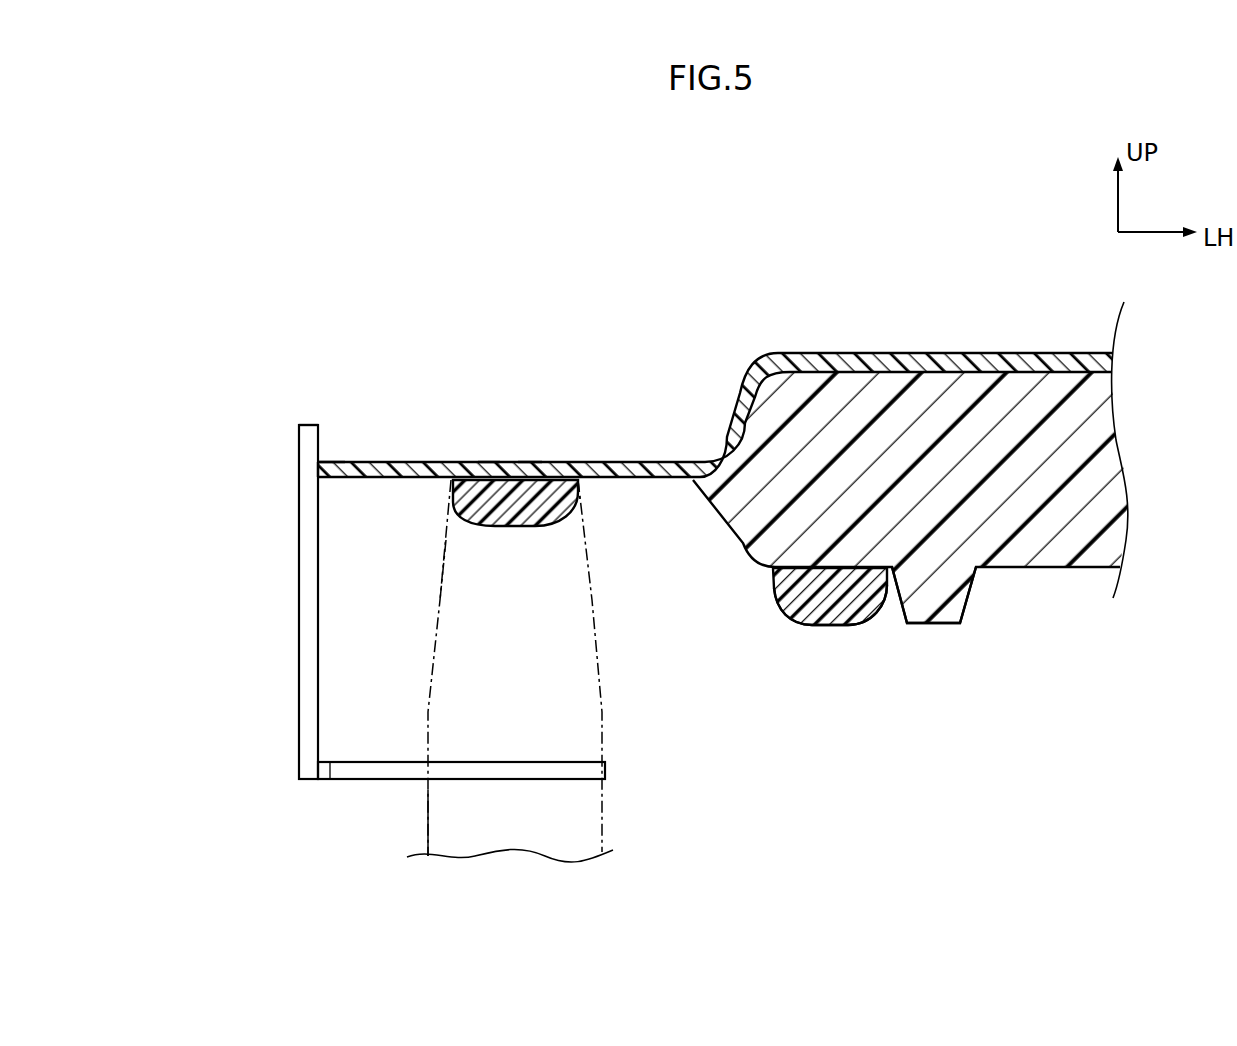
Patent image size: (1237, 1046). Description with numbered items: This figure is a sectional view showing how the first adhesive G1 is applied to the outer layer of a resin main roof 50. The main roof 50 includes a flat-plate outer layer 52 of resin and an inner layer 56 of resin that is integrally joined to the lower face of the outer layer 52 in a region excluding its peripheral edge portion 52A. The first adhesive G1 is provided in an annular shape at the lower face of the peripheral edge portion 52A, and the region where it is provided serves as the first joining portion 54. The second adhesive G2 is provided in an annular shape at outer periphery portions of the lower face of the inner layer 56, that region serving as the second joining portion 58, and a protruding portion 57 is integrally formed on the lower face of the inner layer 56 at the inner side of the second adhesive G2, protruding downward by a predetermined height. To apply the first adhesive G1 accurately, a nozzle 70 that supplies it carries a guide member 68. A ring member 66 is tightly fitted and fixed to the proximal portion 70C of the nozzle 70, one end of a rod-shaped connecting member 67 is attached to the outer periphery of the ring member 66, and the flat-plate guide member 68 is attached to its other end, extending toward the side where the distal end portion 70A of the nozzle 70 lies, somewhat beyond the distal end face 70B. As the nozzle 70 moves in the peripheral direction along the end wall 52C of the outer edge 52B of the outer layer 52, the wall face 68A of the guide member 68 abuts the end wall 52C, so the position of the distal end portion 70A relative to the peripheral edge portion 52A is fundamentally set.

The main roof 50 is at (974, 340).
The outer layer 52 is at (882, 353).
The peripheral edge portion 52A is at (490, 462).
The outer edge 52B is at (320, 462).
The end wall 52C is at (300, 472).
The first joining portion 54 is at (530, 462).
The inner layer 56 is at (1117, 490).
The protruding portion 57 is at (968, 598).
The second joining portion 58 is at (814, 627).
The ring member 66 is at (583, 761).
The connecting member 67 is at (338, 766).
The guide member 68 is at (292, 597).
The wall face 68A is at (320, 448).
The nozzle 70 is at (612, 820).
The distal end portion 70A is at (466, 547).
The distal end face 70B is at (565, 462).
The proximal portion 70C is at (443, 818).
The first adhesive G1 is at (573, 490).
The second adhesive G2 is at (850, 627).